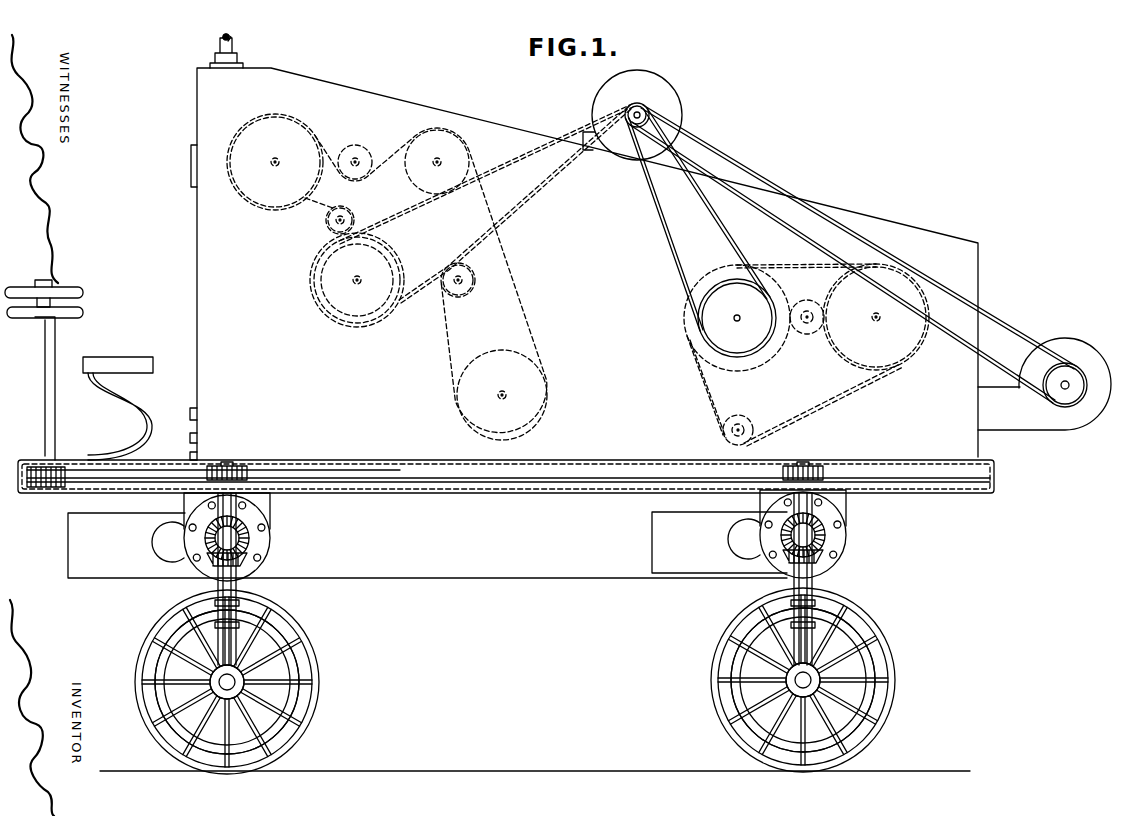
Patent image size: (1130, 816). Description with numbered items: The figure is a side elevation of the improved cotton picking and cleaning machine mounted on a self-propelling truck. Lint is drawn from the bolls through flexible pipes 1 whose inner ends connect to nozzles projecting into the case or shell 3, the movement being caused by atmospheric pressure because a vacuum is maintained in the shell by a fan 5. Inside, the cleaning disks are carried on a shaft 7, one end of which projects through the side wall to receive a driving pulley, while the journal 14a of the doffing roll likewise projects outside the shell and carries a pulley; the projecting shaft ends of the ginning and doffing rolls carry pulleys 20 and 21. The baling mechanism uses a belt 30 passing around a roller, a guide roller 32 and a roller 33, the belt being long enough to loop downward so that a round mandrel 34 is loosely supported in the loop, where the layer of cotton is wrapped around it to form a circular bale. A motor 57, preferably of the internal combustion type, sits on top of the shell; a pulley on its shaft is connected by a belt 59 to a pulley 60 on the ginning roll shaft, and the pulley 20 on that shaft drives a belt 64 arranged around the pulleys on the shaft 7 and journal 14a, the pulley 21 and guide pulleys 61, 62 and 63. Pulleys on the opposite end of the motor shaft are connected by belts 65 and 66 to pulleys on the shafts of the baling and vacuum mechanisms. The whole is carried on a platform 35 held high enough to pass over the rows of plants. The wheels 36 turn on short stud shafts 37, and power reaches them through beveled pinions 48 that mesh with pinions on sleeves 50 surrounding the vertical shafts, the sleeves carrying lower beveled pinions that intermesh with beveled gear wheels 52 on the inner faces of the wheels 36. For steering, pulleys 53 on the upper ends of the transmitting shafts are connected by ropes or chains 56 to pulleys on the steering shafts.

The flexible pipe 1 is at (233, 46).
The case or shell 3 is at (398, 100).
The fan 5 is at (1068, 345).
The shaft 7 is at (275, 158).
The journal 14a is at (380, 128).
The pulley 20 is at (362, 303).
The pulley 21 is at (455, 292).
The belt 30 is at (768, 280).
The guide roller 32 is at (748, 422).
The roller 33 is at (902, 353).
The mandrel 34 is at (808, 333).
The platform 35 is at (457, 490).
The wheel 36 is at (306, 637).
The stud shaft 37 is at (236, 686).
The beveled pinion 48 is at (252, 538).
The sleeve 50 is at (790, 587).
The beveled gear wheel 52 is at (288, 730).
The pulley 53 is at (240, 463).
The rope or chain 56 is at (566, 477).
The motor 57 is at (600, 100).
The belt 59 is at (514, 162).
The pulley 60 is at (400, 260).
The guide pulley 61 is at (328, 230).
The guide pulley 62 is at (438, 160).
The guide pulley 63 is at (537, 395).
The belt 64 is at (300, 208).
The belt 65 is at (664, 235).
The belt 66 is at (782, 186).